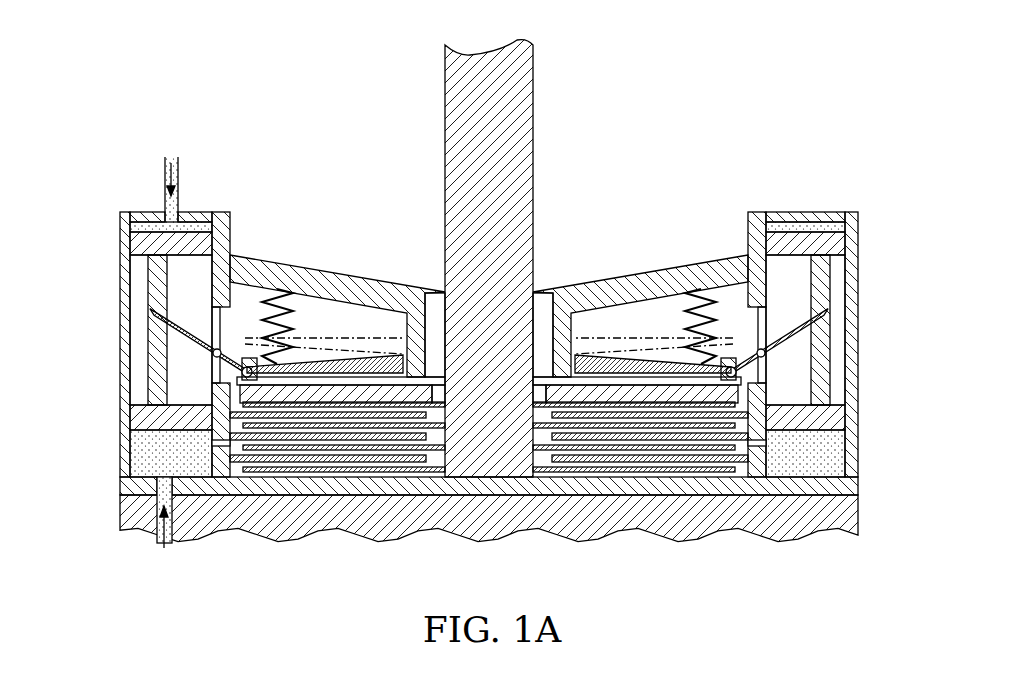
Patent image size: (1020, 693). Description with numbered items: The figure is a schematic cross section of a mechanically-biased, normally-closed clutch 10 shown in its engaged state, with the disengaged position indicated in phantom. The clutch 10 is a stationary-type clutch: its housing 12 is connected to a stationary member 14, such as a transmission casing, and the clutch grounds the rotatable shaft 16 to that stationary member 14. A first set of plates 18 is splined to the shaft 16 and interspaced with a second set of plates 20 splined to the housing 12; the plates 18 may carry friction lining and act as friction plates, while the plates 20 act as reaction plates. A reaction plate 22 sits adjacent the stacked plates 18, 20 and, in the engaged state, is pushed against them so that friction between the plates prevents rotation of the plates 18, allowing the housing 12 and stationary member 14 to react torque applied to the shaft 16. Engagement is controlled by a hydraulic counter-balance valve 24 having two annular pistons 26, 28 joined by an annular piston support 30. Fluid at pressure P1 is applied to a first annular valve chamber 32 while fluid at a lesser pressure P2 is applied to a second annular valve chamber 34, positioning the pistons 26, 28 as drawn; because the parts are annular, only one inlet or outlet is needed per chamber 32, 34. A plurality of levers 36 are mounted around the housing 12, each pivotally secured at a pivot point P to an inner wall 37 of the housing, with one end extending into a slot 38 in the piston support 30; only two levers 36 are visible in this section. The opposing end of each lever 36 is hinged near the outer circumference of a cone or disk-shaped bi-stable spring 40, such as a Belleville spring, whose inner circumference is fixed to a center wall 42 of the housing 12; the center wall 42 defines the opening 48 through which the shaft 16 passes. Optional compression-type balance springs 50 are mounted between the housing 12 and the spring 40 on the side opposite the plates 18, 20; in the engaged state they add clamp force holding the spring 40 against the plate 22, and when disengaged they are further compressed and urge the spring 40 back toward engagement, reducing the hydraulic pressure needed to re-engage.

The mechanically-biased clutch 10 is at (668, 146).
The housing 12 is at (858, 290).
The stationary member 14 is at (815, 510).
The shaft 16 is at (533, 173).
The first set of plates 18 is at (538, 432).
The second set of plates 20 is at (685, 455).
The reaction plate 22 is at (335, 398).
The hydraulic counter-balance valve 24 is at (130, 265).
The piston 26 is at (128, 242).
The piston 28 is at (130, 422).
The piston support 30 is at (150, 345).
The first annular valve chamber 32 is at (150, 453).
The second annular valve chamber 34 is at (190, 228).
The lever 36 is at (230, 353).
The inner wall 37 is at (220, 443).
The slot 38 is at (150, 312).
The bi-stable spring 40 is at (317, 353).
The center wall 42 is at (415, 313).
The opening 48 is at (426, 340).
The balance spring 50 is at (298, 325).
The pivot point P is at (190, 320).
The pressure P1 is at (165, 553).
The pressure P2 is at (170, 150).